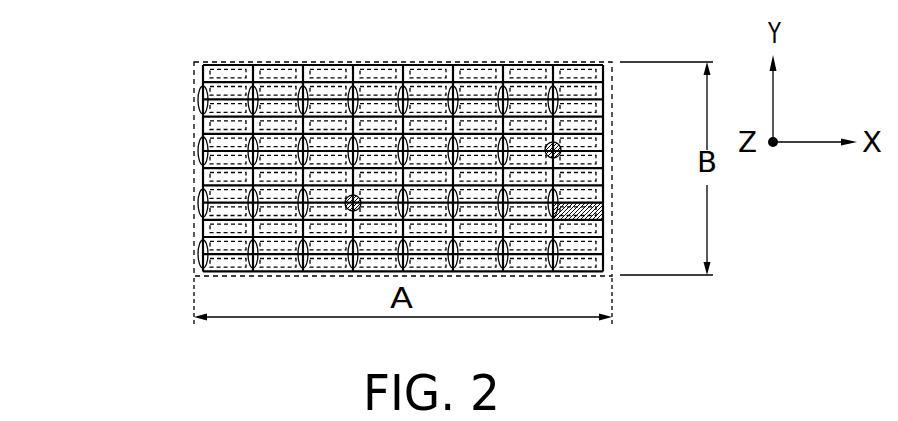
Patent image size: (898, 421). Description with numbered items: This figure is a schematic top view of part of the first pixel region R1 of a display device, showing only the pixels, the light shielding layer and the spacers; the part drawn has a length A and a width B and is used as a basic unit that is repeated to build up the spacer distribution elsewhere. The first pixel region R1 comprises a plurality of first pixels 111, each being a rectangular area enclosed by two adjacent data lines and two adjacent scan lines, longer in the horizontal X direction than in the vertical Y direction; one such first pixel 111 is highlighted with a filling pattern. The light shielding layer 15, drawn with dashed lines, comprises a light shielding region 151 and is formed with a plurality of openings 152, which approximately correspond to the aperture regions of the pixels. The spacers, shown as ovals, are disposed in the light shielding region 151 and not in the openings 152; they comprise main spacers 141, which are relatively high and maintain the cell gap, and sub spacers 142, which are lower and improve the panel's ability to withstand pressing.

The first pixel region R1 is at (164, 102).
The light shielding layer 15 is at (100, 150).
The light shielding region 151 is at (202, 163).
The openings 152 is at (205, 232).
The sub spacers 142 is at (558, 93).
The main spacers 141 is at (561, 146).
The first pixels 111 is at (605, 212).